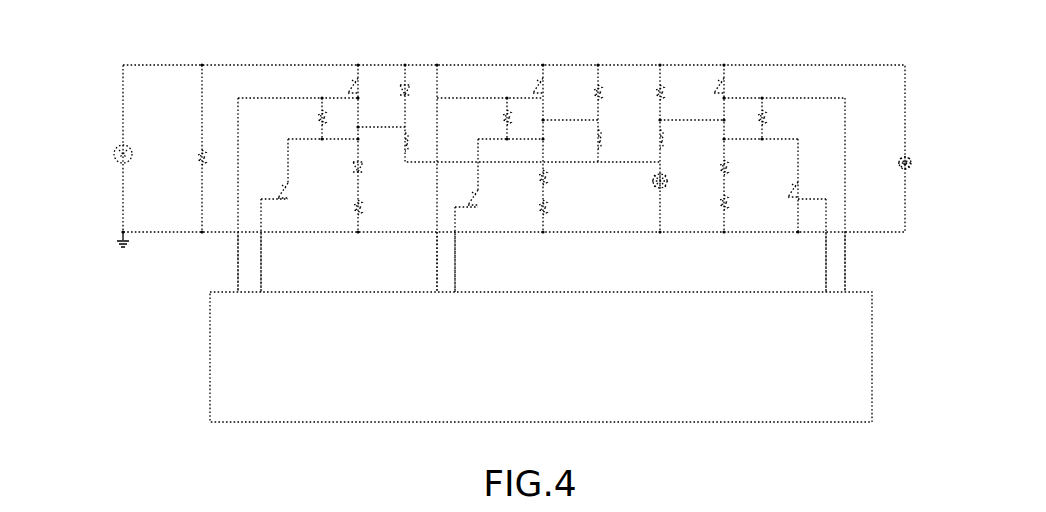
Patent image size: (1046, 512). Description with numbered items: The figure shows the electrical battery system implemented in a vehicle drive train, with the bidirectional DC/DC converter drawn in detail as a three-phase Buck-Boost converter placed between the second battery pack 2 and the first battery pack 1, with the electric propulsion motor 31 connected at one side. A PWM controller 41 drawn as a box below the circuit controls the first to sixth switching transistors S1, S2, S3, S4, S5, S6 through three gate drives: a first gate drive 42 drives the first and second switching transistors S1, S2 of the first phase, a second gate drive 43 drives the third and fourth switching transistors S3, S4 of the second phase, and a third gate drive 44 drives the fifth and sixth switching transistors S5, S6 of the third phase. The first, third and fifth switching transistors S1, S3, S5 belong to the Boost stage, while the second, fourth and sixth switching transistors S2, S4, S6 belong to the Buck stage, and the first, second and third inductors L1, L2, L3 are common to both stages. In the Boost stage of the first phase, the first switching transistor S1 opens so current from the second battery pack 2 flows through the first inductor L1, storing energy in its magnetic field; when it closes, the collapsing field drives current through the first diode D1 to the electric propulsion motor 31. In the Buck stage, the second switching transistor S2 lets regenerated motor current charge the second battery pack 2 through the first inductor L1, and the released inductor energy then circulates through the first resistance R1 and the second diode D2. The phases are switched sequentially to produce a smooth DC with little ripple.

The electric propulsion motor 31 is at (113, 153).
The first battery pack 1 is at (913, 163).
The second battery pack 2 is at (647, 182).
The first switching transistor S1 is at (272, 185).
The second switching transistor S2 is at (348, 85).
The third switching transistor S3 is at (483, 197).
The fourth switching transistor S4 is at (530, 85).
The fifth switching transistor S5 is at (797, 190).
The sixth switching transistor S6 is at (728, 85).
The first diode D1 is at (400, 95).
The second diode D2 is at (352, 168).
The first resistance R1 is at (356, 209).
The first inductor L1 is at (402, 143).
The second inductor L2 is at (593, 139).
The third inductor L3 is at (665, 143).
The PWM controller 41 is at (387, 385).
The first gate drive 42 is at (252, 279).
The second gate drive 43 is at (450, 279).
The third gate drive 44 is at (837, 279).